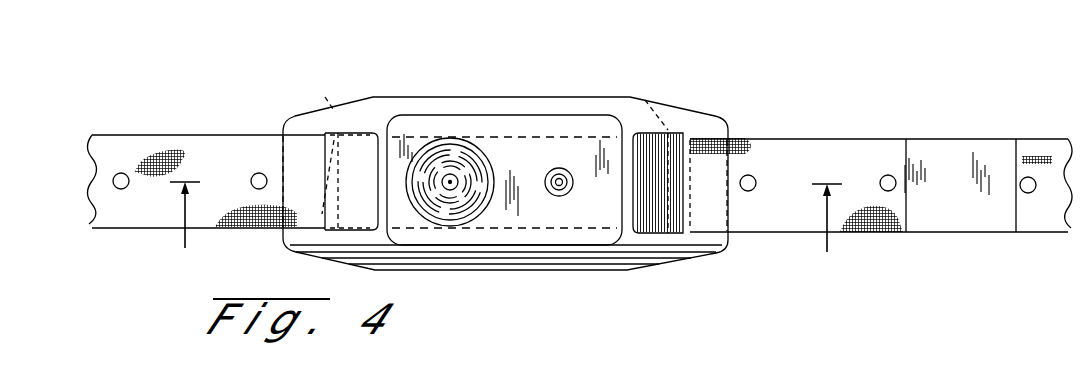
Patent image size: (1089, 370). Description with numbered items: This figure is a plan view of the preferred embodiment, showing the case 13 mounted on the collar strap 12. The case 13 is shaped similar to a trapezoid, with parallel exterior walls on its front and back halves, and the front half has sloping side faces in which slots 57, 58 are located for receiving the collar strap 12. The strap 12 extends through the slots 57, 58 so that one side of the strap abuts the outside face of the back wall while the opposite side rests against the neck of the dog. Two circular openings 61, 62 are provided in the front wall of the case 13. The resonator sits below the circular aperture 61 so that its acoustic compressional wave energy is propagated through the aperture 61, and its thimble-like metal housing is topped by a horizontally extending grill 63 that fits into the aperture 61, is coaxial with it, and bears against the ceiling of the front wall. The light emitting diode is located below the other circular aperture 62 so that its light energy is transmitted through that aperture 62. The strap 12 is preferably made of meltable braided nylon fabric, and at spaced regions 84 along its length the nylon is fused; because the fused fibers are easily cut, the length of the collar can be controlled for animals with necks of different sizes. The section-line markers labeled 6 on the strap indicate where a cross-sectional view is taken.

The collar strap 12 is at (870, 145).
The spaced regions 84 is at (955, 148).
The case 13 is at (392, 90).
The slot 57 is at (292, 118).
The slot 58 is at (700, 138).
The circular opening 61 is at (452, 138).
The circular opening 62 is at (564, 168).
The grill 63 is at (465, 196).
The section line 6- 6 is at (506, 207).